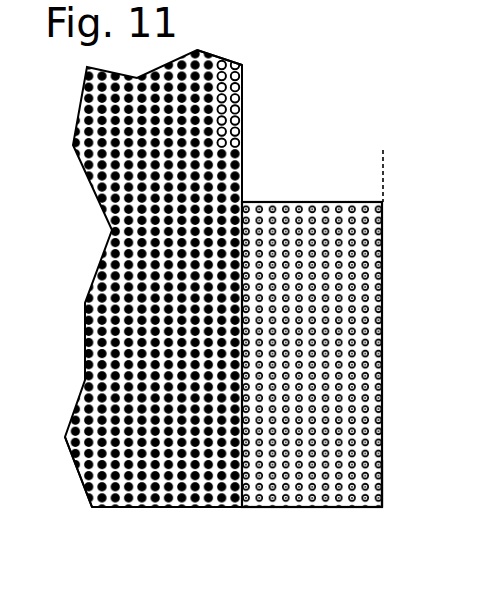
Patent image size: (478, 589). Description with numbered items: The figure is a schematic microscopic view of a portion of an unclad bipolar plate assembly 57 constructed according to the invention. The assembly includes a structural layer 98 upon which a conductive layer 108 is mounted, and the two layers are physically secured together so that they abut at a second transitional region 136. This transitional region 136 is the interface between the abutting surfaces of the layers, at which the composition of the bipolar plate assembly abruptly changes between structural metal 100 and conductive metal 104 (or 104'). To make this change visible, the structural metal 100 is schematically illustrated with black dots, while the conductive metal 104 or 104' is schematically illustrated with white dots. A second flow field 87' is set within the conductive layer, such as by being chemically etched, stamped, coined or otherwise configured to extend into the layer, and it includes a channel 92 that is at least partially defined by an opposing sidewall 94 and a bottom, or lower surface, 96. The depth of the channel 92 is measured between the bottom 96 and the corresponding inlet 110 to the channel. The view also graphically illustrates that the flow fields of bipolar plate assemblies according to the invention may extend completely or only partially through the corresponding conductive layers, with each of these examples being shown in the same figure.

The bipolar plate assembly 57 is at (291, 61).
The second flow field 87' is at (283, 133).
The channel 92 is at (326, 122).
The bottom 96 is at (252, 80).
The inlet 110 is at (380, 168).
The sidewall 94 is at (284, 202).
The structural layer 98 is at (100, 512).
The structural metal 100 is at (138, 508).
The second transitional region 136 is at (234, 512).
The conductive layer 108 is at (262, 510).
The conductive metal 104 is at (341, 528).
The conductive metal 104' is at (403, 505).